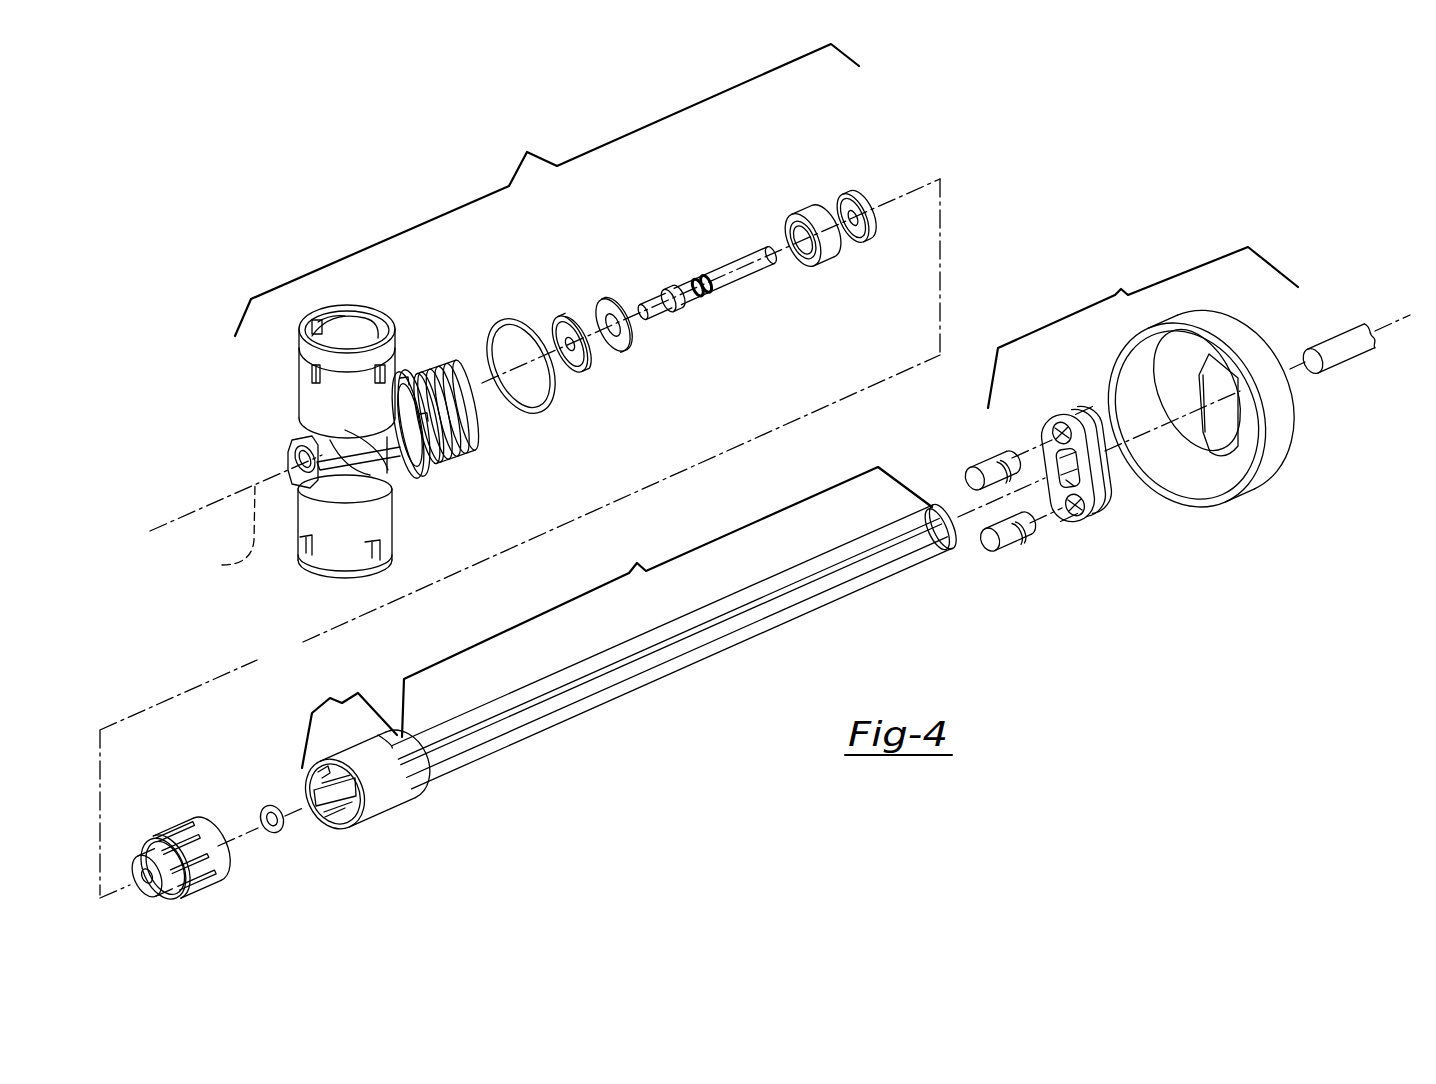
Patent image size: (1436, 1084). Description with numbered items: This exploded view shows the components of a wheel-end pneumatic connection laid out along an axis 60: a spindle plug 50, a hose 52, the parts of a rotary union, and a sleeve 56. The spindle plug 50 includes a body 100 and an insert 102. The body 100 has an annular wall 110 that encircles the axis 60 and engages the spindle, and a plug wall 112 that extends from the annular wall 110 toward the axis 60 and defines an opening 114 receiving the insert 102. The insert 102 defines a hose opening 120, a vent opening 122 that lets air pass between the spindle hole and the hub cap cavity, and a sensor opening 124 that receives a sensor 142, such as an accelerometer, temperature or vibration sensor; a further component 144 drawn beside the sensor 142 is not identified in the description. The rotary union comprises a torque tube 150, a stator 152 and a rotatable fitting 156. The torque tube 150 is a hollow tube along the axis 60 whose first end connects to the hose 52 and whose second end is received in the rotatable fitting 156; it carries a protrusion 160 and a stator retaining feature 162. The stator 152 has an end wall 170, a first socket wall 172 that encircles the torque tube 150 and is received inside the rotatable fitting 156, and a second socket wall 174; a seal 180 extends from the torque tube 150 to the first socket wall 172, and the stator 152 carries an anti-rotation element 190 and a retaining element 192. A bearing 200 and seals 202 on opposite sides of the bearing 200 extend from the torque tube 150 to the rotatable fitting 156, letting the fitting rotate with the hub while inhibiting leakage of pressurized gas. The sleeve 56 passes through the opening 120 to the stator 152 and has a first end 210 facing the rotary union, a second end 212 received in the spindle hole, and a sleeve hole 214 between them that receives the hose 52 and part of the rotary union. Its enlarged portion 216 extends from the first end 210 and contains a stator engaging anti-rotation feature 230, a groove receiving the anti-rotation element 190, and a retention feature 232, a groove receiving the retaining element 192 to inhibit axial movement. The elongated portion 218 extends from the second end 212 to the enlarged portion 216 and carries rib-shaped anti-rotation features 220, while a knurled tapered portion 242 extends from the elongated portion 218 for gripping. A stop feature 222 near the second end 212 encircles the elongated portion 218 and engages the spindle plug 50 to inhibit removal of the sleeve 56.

The spindle plug 50 is at (1143, 327).
The hose 52 is at (1330, 343).
The sleeve 56 is at (612, 652).
The axis 60 is at (226, 530).
The body 100 is at (1240, 420).
The insert 102 is at (1081, 465).
The annular wall 110 is at (1292, 428).
The plug wall 112 is at (1196, 389).
The opening 114 is at (1215, 437).
The opening 120 is at (1100, 497).
The vent opening 122 is at (1056, 429).
The sensor opening 124 is at (1077, 516).
The sensor 142 is at (985, 467).
The lower pin 144 is at (1010, 546).
The torque tube 150 is at (683, 266).
The stator 152 is at (194, 852).
The rotatable fitting 156 is at (302, 403).
The protrusion 160 is at (668, 298).
The stator retaining feature 162 is at (706, 298).
The end wall 170 is at (146, 880).
The first socket wall 172 is at (174, 892).
The second socket wall 174 is at (212, 845).
The seal 180 is at (270, 806).
The anti-rotation element 190 is at (180, 832).
The retaining element 192 is at (214, 878).
The bearing 200 is at (805, 213).
The seals 202 is at (559, 332).
The first end 210 is at (374, 775).
The second end 212 is at (925, 519).
The sleeve hole 214 is at (336, 822).
The enlarged portion 216 is at (349, 720).
The elongated portion 218 is at (667, 602).
The anti-rotation feature 220 is at (742, 610).
The stop feature 222 is at (944, 545).
The stator engaging anti-rotation feature 230 is at (360, 793).
The retention feature 232 is at (326, 765).
The tapered portion 242 is at (418, 790).